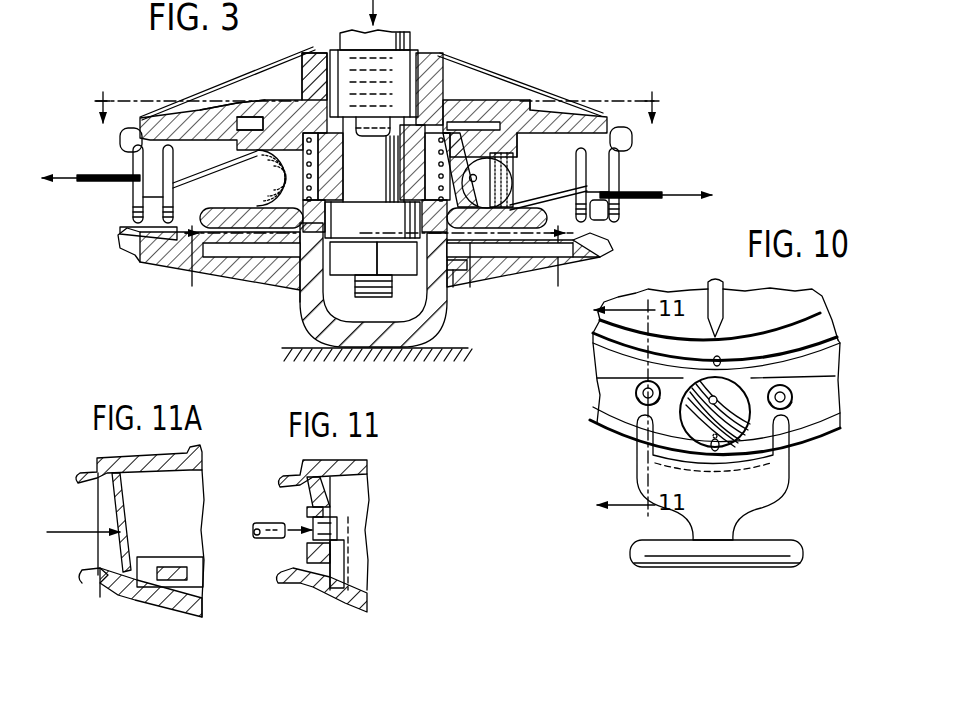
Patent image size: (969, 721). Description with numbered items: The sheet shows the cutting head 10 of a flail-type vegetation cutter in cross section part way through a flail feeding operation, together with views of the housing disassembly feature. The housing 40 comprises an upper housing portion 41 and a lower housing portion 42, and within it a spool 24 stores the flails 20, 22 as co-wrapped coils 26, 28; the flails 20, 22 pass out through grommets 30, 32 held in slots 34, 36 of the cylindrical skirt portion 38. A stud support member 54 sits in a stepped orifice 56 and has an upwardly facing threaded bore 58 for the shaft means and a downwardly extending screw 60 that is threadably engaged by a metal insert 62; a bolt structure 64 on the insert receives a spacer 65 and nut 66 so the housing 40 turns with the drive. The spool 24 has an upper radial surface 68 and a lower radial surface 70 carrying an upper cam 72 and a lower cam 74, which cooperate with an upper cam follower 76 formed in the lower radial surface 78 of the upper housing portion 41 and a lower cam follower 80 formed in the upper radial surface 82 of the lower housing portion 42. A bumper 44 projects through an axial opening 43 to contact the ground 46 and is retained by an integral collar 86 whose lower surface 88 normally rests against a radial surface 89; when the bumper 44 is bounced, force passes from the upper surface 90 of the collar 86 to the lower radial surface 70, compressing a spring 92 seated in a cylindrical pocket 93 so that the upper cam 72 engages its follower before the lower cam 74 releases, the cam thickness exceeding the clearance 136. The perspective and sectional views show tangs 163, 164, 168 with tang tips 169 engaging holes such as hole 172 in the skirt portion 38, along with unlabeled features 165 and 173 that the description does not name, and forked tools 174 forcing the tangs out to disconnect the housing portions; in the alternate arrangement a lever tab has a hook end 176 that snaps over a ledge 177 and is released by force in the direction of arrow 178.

In FIG. 3, the cutting head 10 is at (660, 68).
In FIG. 3, the flail 20 is at (88, 183).
In FIG. 3, the flail 22 is at (663, 193).
In FIG. 3, the spool 24 is at (563, 127).
In FIG. 11A, the spool 24 is at (185, 570).
In FIG. 3, the coil 26 is at (527, 133).
In FIG. 3, the coil 28 is at (496, 262).
In FIG. 3, the grommet 30 is at (133, 212).
In FIG. 3, the grommet 32 is at (621, 207).
In FIG. 3, the slot 34 is at (152, 165).
In FIG. 3, the slot 36 is at (598, 253).
In FIG. 3, the cylindrical skirt portion 38 is at (128, 150).
In FIG. 3, the housing 40 is at (254, 92).
In FIG. 3, the upper housing portion 41 is at (267, 106).
In FIG. 10, the upper housing portion 41 is at (680, 293).
In FIG. 11A, the upper housing portion 41 is at (100, 458).
In FIG. 11, the upper housing portion 41 is at (305, 463).
In FIG. 3, the lower housing portion 42 is at (262, 284).
In FIG. 10, the lower housing portion 42 is at (606, 412).
In FIG. 11A, the lower housing portion 42 is at (168, 613).
In FIG. 11, the lower housing portion 42 is at (337, 607).
In FIG. 3, the axial opening 43 is at (300, 297).
In FIG. 3, the bumper 44 is at (415, 348).
In FIG. 3, the ground 46 is at (298, 351).
In FIG. 3, the stud support member 54 is at (421, 60).
In FIG. 3, the stepped orifice 56 is at (314, 52).
In FIG. 3, the threaded bore 58 is at (447, 54).
In FIG. 3, the screw 60 is at (394, 36).
In FIG. 3, the metal insert 62 is at (343, 60).
In FIG. 3, the bolt structure 64 is at (387, 289).
In FIG. 3, the spacer 65 is at (388, 229).
In FIG. 3, the nut 66 is at (343, 272).
In FIG. 3, the upper radial surface 68 is at (545, 120).
In FIG. 3, the lower radial surface 70 is at (521, 277).
In FIG. 3, the upper cam 72 is at (493, 120).
In FIG. 3, the lower cam 74 is at (488, 264).
In FIG. 3, the upper cam follower 76 is at (247, 122).
In FIG. 3, the lower radial surface 78 is at (182, 143).
In FIG. 3, the lower cam follower 80 is at (257, 259).
In FIG. 3, the upper radial surface 82 is at (180, 250).
In FIG. 3, the collar 86 is at (447, 242).
In FIG. 3, the lower surface 88 is at (302, 252).
In FIG. 3, the radial surface 89 is at (455, 274).
In FIG. 3, the upper surface 90 is at (436, 226).
In FIG. 3, the spring 92 is at (256, 172).
In FIG. 3, the cylindrical pocket 93 is at (505, 162).
In FIG. 3, the clearance 136 is at (472, 252).
In FIG. 10, the tang 163 is at (838, 422).
In FIG. 10, the tang 164 is at (636, 393).
In FIG. 11, the tang 164 is at (336, 557).
In FIG. 10, the pin boss 165 is at (640, 386).
In FIG. 11, the pin boss 165 is at (335, 527).
In FIG. 10, the tang 168 is at (793, 396).
In FIG. 10, the tang tip 169 is at (642, 408).
In FIG. 11, the tang tip 169 is at (310, 517).
In FIG. 10, the hole 172 is at (720, 357).
In FIG. 10, the pin 173 is at (727, 457).
In FIG. 10, the forked tool 174 is at (787, 465).
In FIG. 11, the forked tool 174 is at (263, 540).
In FIG. 11A, the hook end 176 is at (123, 520).
In FIG. 11A, the ledge 177 is at (107, 597).
In FIG. 11A, the arrow 178 is at (80, 517).